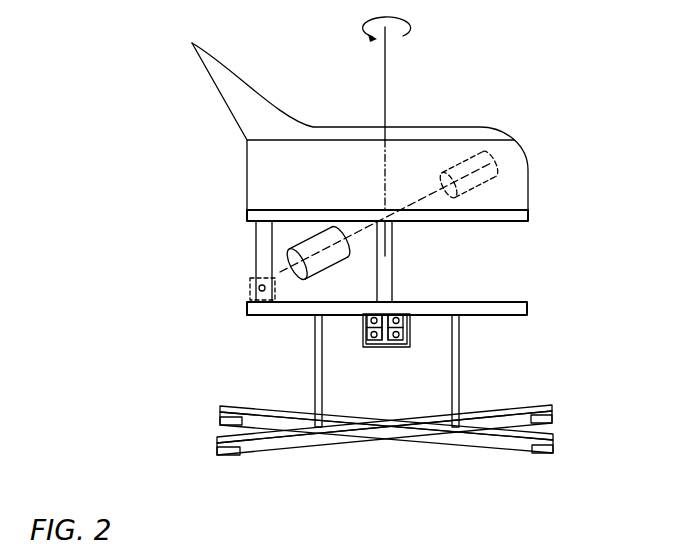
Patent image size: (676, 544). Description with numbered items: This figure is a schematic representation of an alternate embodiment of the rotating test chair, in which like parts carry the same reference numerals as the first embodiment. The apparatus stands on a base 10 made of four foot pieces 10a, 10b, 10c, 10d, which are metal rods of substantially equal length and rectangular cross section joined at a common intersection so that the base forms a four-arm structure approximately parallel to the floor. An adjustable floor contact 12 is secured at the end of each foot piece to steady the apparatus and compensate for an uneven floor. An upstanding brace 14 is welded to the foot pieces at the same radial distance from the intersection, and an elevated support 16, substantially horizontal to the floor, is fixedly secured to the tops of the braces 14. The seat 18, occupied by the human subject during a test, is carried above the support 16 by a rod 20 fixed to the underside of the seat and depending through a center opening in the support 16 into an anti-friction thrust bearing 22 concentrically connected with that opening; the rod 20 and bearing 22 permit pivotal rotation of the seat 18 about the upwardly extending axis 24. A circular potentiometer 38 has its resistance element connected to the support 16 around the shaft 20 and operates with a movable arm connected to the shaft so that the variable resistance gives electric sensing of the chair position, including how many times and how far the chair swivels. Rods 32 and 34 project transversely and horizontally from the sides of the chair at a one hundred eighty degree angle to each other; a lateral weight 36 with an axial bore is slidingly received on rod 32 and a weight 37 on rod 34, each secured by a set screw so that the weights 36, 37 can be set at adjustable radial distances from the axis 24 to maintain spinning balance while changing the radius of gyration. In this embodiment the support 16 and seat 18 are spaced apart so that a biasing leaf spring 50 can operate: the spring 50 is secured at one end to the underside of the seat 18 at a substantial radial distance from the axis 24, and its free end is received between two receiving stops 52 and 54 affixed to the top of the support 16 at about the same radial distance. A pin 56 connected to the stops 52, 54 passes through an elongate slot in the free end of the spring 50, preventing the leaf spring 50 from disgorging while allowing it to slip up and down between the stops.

The base 10 is at (373, 426).
The foot piece 10a is at (272, 445).
The foot piece 10b is at (260, 405).
The foot piece 10c is at (522, 403).
The foot piece 10d is at (512, 445).
The adjustable floor contact 12 is at (227, 457).
The upstanding brace 14 is at (460, 362).
The elevated support 16 is at (507, 305).
The seat 18 is at (520, 197).
The rod 20 is at (395, 262).
The anti-friction thrust bearing 22 is at (372, 336).
The upwardly extending axis 24 is at (387, 72).
The rod 32 is at (360, 233).
The rod 34 is at (423, 192).
The lateral weight 36 is at (323, 272).
The weight 37 is at (483, 182).
The circular potentiometer 38 is at (401, 323).
The leaf spring 50 is at (258, 250).
The receiving stop 52 is at (203, 306).
The receiving stop 54 is at (236, 289).
The pin 56 is at (252, 298).